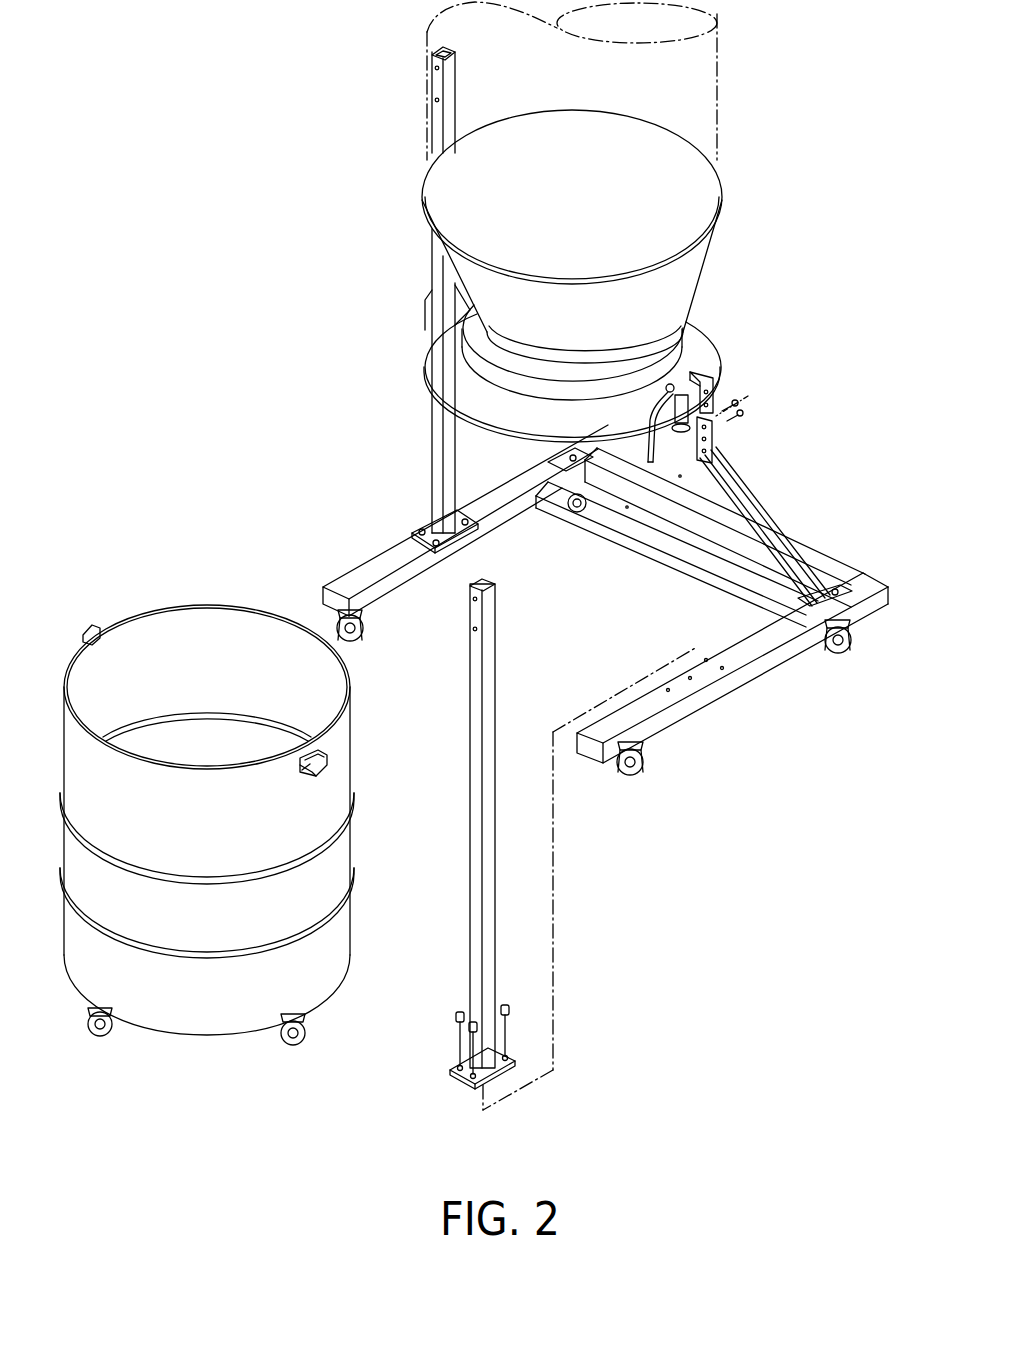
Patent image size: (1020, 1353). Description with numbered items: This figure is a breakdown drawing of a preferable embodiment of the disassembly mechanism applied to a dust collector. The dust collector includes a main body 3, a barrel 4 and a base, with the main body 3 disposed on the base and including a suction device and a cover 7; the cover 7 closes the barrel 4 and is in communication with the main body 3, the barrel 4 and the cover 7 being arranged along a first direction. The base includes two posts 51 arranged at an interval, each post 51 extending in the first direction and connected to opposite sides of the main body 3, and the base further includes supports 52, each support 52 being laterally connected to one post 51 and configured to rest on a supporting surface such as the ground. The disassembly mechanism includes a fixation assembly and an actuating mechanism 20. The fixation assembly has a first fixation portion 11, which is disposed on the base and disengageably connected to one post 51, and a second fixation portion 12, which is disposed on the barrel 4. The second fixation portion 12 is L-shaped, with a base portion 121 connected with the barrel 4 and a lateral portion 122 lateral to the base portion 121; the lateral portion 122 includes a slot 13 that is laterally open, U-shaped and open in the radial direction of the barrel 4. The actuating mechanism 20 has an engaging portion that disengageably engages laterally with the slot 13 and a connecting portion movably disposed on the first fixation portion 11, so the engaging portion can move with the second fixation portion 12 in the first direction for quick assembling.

The main body 3 is at (665, 282).
The cover 7 is at (690, 327).
The first fixation portion 11 is at (712, 388).
The support 52 is at (757, 508).
The actuating mechanism 20 is at (677, 445).
The slot 13 is at (318, 753).
The lateral portion 122 is at (328, 763).
The base portion 121 is at (312, 778).
The second fixation portion 12 is at (428, 742).
The barrel 4 is at (330, 956).
The post 51 is at (497, 933).